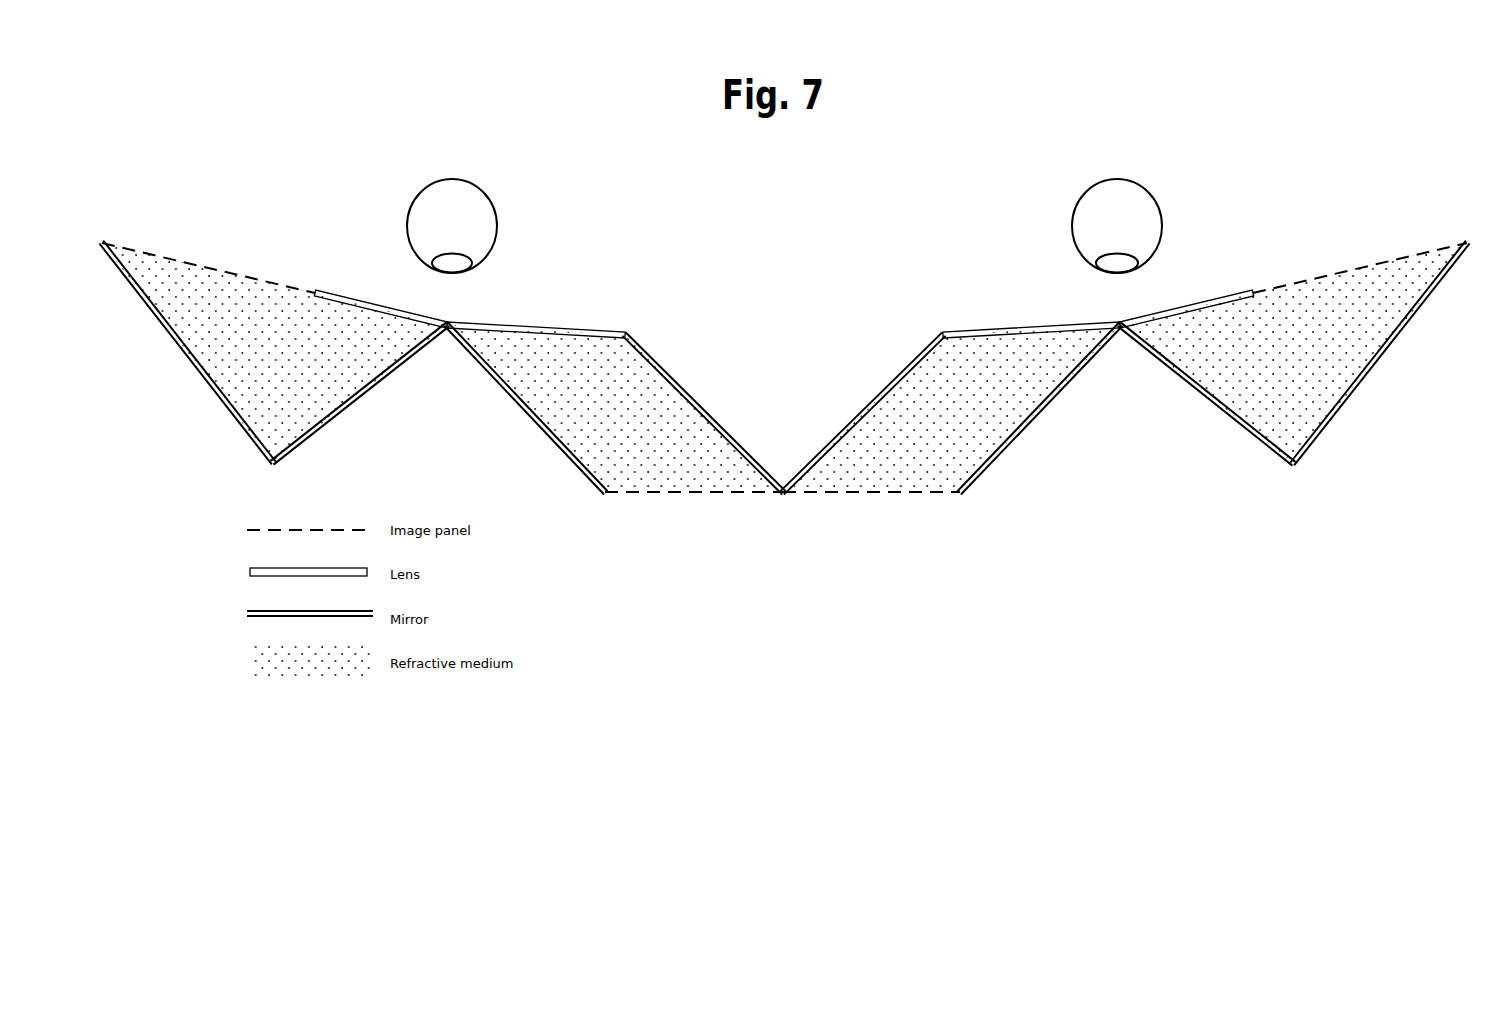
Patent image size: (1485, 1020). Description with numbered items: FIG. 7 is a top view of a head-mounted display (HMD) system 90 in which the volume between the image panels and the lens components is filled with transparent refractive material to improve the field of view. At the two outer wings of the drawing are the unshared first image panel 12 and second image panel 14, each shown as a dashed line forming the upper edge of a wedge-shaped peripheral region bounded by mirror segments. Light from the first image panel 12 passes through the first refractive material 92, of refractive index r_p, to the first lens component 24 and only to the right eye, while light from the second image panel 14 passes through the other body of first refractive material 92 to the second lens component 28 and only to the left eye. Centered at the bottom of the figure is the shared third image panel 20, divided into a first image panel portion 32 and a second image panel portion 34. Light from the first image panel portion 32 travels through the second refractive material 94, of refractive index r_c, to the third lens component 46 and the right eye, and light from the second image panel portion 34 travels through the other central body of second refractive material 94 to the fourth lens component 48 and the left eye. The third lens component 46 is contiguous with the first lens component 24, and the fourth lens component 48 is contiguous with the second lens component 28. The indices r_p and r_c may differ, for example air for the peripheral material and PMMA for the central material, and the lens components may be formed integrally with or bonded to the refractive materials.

The first image panel 12 is at (262, 282).
The second image panel 14 is at (1323, 277).
The first lens component 24 is at (345, 297).
The second lens component 28 is at (1217, 305).
The third lens component 46 is at (597, 329).
The fourth lens component 48 is at (982, 333).
The head-mounted display (HMD) system 90 is at (792, 265).
The first refractive material 92 is at (313, 377).
The second refractive material 94 is at (622, 388).
The third image panel 20 is at (783, 506).
The first image panel portion 32 is at (670, 494).
The second image panel portion 34 is at (912, 493).